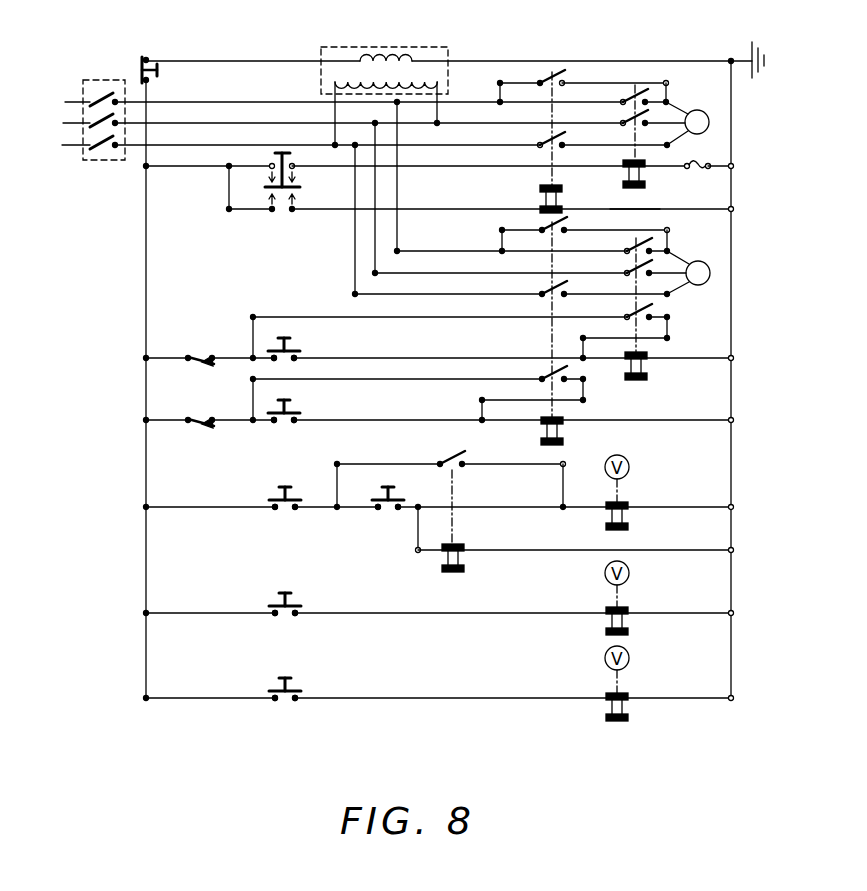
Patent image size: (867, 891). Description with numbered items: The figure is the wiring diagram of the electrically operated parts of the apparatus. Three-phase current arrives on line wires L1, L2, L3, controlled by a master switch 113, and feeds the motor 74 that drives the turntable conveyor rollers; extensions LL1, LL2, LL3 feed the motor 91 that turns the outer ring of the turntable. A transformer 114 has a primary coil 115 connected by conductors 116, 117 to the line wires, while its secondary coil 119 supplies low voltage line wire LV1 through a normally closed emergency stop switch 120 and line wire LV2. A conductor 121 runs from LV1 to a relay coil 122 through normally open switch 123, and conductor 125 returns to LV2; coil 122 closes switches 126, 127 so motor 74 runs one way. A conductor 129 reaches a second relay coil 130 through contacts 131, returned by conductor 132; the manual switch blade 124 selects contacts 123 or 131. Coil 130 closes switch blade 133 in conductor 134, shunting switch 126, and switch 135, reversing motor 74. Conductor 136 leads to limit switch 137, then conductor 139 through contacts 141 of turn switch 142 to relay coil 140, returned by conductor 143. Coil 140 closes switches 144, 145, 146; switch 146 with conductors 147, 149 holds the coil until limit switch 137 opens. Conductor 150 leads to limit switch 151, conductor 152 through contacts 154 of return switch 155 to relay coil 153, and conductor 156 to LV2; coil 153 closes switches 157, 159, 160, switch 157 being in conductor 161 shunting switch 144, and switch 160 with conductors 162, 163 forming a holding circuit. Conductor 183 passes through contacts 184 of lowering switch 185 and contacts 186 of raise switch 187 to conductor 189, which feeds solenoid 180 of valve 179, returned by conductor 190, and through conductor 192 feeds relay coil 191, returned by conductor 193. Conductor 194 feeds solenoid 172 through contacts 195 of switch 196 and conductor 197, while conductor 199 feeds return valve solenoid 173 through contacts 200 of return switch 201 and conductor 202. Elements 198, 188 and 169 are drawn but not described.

The master switch 113 is at (97, 80).
The emergency stop switch 120 is at (158, 69).
The transformer 114 is at (328, 47).
The secondary coil 119 is at (392, 60).
The primary coil 115 is at (345, 84).
The conductor 116 is at (442, 112).
The conductor 117 is at (333, 119).
The line wire L1 is at (230, 101).
The line wire L2 is at (228, 122).
The line wire L3 is at (228, 144).
The switch blade 133 is at (560, 78).
The conductor 134 is at (618, 80).
The switch 126 is at (626, 99).
The switch 127 is at (624, 121).
The switch 135 is at (548, 139).
The motor 74 is at (710, 122).
The conductor 125 is at (710, 160).
The relay coil 122 is at (645, 176).
The relay coil 130 is at (540, 203).
The conductor 132 is at (623, 208).
The conductor 121 is at (215, 197).
The conductor 129 is at (224, 236).
The switch blade 124 is at (279, 153).
The switch 123 is at (277, 172).
The contacts 131 is at (273, 213).
The line wire LL1 is at (456, 251).
The line wire LL2 is at (446, 273).
The line wire LL3 is at (446, 294).
The switch 157 is at (554, 226).
The conductor 161 is at (667, 230).
The switch 144 is at (628, 248).
The switch 145 is at (628, 270).
The switch 159 is at (546, 292).
The switch 146 is at (631, 315).
The motor 91 is at (712, 272).
The conductor 149 is at (432, 318).
The conductor 147 is at (650, 347).
The relay coil 140 is at (645, 366).
The low voltage line wire LV1 is at (146, 262).
The low voltage line wire LV2 is at (733, 315).
The conductor 136 is at (166, 356).
The limit switch 137 is at (214, 333).
The turn switch 142 is at (291, 340).
The contacts 141 is at (276, 362).
The conductor 139 is at (440, 357).
The conductor 143 is at (705, 358).
The conductor 150 is at (166, 418).
The limit switch 151 is at (218, 396).
The return switch 155 is at (292, 410).
The contacts 154 is at (293, 423).
The conductor 152 is at (421, 419).
The conductor 162 is at (567, 405).
The switch 160 is at (549, 376).
The conductor 163 is at (416, 399).
The conductor 156 is at (638, 422).
The relay coil 153 is at (541, 433).
The conductor 198 is at (375, 464).
The contact 188 is at (449, 468).
The conductor 183 is at (224, 507).
The plunger lowering switch 185 is at (295, 492).
The contacts 184 is at (274, 511).
The switch 187 is at (392, 494).
The contacts 186 is at (391, 528).
The conductor 189 is at (497, 508).
The conductor 192 is at (417, 546).
The conductor 193 is at (556, 550).
The relay coil 191 is at (441, 568).
The valve 179 is at (631, 470).
The conductor 190 is at (660, 507).
The solenoid 180 is at (621, 519).
The conductor 194 is at (232, 613).
The switch 196 is at (280, 590).
The contacts 195 is at (275, 617).
The conductor 197 is at (658, 613).
The solenoid valve 169 is at (631, 574).
The solenoid 172 is at (609, 625).
The conductor 199 is at (232, 698).
The return switch 201 is at (288, 676).
The contacts 200 is at (290, 723).
The conductor 202 is at (681, 700).
The return valve solenoid 173 is at (610, 708).